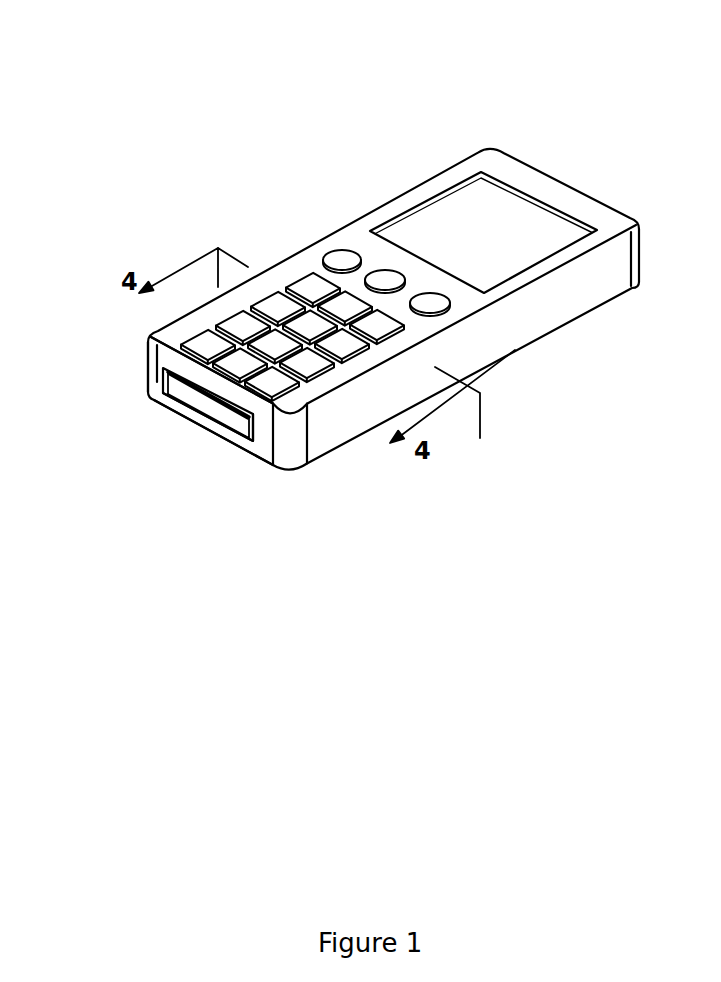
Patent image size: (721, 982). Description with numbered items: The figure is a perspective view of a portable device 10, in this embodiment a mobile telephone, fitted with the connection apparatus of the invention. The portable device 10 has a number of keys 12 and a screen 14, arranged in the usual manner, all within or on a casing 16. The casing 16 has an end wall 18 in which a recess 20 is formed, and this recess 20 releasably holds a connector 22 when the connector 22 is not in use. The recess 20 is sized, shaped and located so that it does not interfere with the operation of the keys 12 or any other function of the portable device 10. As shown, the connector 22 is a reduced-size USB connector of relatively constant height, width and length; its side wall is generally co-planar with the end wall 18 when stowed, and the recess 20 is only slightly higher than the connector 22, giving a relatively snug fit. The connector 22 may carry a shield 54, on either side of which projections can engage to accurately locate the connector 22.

The portable device 10 is at (338, 215).
The keys 12 is at (272, 303).
The screen 14 is at (472, 193).
The casing 16 is at (152, 372).
The end wall 18 is at (160, 377).
The recess 20 is at (237, 437).
The connector 22 is at (183, 390).
The shield 54 is at (217, 417).